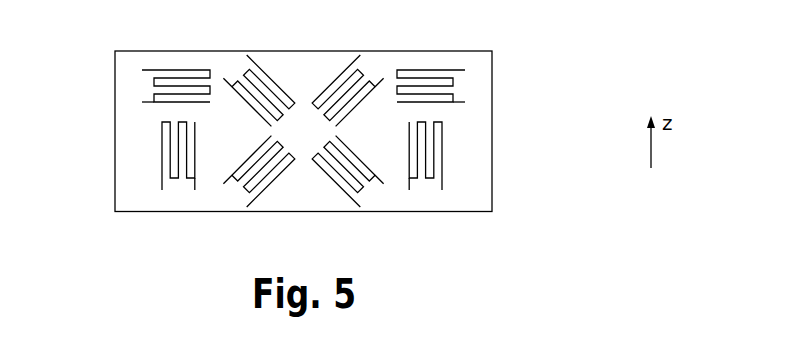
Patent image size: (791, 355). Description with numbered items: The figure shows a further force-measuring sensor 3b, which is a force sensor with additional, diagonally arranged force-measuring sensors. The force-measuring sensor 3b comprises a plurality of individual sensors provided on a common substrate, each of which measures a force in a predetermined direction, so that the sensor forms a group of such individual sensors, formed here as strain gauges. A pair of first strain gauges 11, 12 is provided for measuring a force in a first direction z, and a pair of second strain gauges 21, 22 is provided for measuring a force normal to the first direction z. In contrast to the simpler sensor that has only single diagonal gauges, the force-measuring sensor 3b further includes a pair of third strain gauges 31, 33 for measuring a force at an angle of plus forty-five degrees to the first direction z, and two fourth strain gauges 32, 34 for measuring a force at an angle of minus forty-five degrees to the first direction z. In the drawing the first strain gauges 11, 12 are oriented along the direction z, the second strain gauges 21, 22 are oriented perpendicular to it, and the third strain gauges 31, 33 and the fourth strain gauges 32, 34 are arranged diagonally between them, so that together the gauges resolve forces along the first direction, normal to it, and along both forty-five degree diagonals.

The force-measuring sensor 3b is at (522, 57).
The first strain gauge 11 is at (178, 190).
The first strain gauge 12 is at (427, 188).
The second strain gauge 21 is at (145, 87).
The second strain gauge 22 is at (460, 85).
The third strain gauge 31 is at (235, 190).
The fourth strain gauge 32 is at (368, 192).
The third strain gauge 33 is at (373, 62).
The fourth strain gauge 34 is at (233, 63).